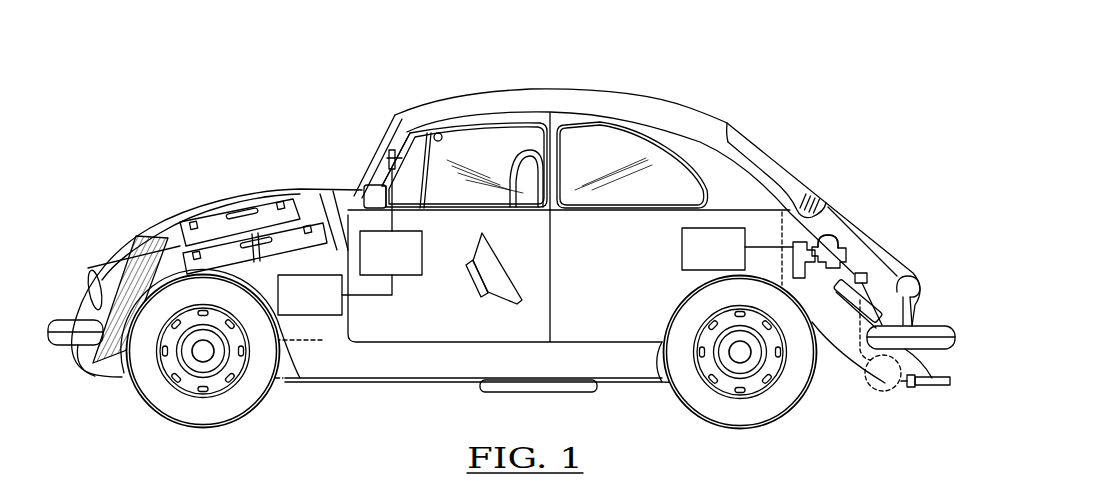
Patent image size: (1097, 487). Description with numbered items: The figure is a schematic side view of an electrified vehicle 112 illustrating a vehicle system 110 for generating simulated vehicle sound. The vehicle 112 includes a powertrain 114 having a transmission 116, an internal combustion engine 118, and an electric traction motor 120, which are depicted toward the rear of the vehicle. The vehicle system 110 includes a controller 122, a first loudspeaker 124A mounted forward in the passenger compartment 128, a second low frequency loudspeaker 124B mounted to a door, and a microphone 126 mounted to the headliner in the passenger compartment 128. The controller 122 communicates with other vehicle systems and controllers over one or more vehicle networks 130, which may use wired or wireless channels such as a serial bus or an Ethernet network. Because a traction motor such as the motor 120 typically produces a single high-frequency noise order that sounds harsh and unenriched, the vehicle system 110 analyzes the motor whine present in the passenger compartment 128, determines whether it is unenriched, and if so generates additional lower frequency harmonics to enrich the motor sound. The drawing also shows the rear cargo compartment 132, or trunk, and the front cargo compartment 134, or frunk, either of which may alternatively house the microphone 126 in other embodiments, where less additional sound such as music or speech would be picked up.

The vehicle system 110 is at (760, 92).
The vehicle 112 is at (593, 100).
The powertrain 114 is at (838, 229).
The transmission 116 is at (876, 277).
The internal combustion engine 118 is at (846, 250).
The electric traction motor 120 is at (737, 249).
The controller 122 is at (391, 253).
The first loudspeaker 124A is at (388, 156).
The second low frequency loudspeaker 124B is at (469, 287).
The microphone 126 is at (438, 132).
The passenger compartment 128 is at (493, 137).
The vehicle network 130 is at (335, 295).
The rear cargo compartment 132 is at (830, 189).
The front cargo compartment 134 is at (237, 206).